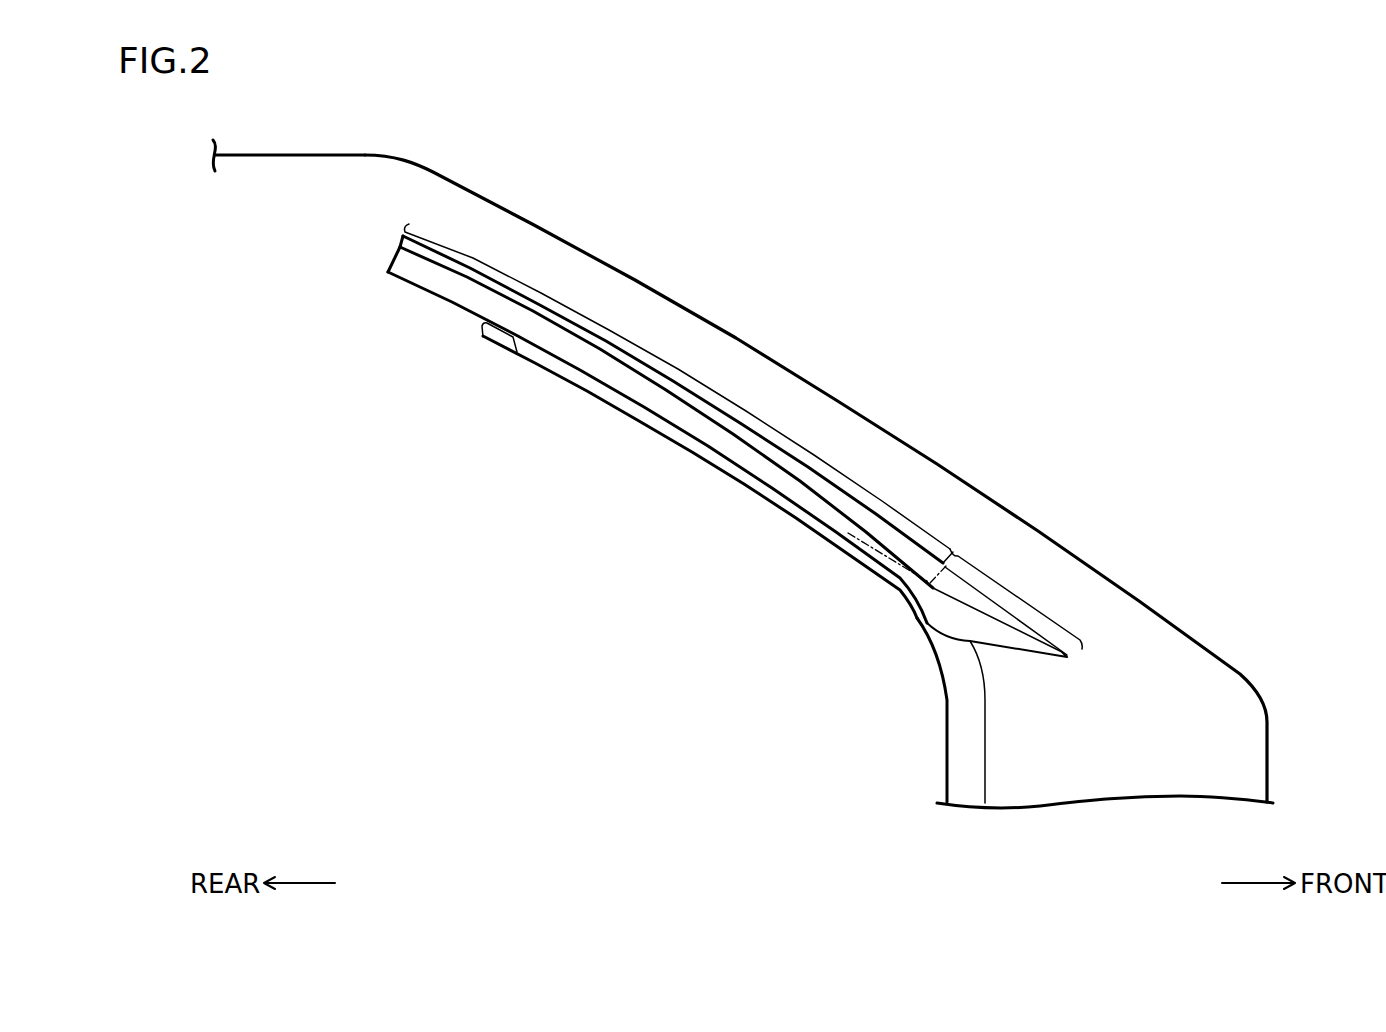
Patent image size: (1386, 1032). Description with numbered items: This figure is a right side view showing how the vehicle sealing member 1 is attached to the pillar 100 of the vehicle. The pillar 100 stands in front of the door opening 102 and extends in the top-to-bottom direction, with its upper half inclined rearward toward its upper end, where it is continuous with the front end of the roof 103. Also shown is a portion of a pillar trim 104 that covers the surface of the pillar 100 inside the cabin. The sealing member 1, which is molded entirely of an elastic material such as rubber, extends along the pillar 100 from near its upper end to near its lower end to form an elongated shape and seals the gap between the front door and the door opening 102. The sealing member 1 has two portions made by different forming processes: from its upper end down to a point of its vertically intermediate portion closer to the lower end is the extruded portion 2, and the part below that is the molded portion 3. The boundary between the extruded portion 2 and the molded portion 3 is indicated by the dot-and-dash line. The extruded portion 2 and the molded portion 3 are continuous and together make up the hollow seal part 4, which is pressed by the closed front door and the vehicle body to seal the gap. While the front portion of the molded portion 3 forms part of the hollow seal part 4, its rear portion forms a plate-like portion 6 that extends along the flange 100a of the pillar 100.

The vehicle sealing member 1 is at (513, 338).
The extruded portion 2 is at (676, 370).
The molded portion 3 is at (1030, 594).
The hollow seal part 4 is at (742, 453).
The plate-like portion 6 is at (923, 627).
The pillar 100 is at (1090, 561).
The flange 100a is at (963, 780).
The door opening 102 is at (945, 740).
The roof 103 is at (303, 154).
The pillar trim 104 is at (639, 428).